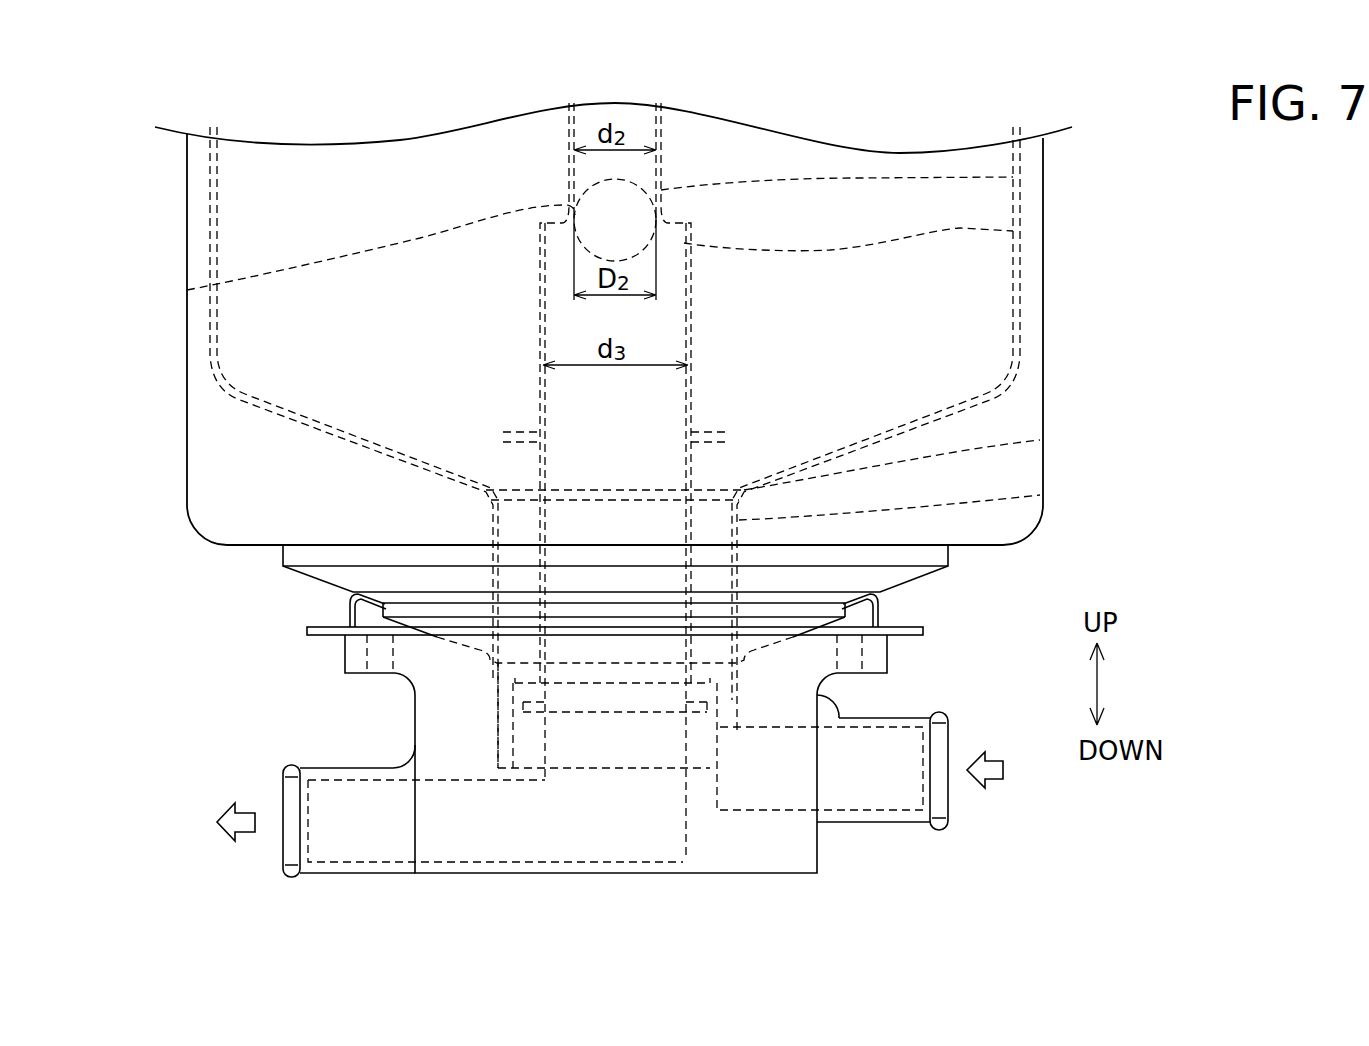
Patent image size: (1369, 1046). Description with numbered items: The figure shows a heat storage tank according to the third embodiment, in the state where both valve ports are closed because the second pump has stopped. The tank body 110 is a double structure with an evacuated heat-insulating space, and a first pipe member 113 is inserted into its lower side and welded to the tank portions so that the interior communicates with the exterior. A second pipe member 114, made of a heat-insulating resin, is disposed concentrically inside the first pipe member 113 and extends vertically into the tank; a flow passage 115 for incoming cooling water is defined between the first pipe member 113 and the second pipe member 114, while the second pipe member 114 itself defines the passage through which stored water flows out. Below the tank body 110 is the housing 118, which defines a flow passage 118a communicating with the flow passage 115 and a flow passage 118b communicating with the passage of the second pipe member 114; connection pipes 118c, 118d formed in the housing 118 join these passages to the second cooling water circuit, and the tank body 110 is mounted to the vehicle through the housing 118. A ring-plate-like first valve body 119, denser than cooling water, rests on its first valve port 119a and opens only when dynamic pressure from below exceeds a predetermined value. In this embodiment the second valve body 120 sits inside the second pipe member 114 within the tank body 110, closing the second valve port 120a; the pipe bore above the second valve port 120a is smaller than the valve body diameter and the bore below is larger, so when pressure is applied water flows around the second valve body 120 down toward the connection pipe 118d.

The tank body 110 is at (1043, 355).
The first pipe member 113 is at (500, 578).
The second pipe member 114 is at (1013, 177).
The flow passage 115 is at (505, 527).
The housing 118 is at (758, 845).
The flow passage 118a is at (897, 750).
The flow passage 118b is at (510, 835).
The connection pipe 118c is at (940, 830).
The connection pipe 118d is at (393, 875).
The first valve body 119 is at (1040, 440).
The first valve port 119a is at (1040, 495).
The second valve body 120 is at (187, 290).
The second valve port 120a is at (1013, 231).